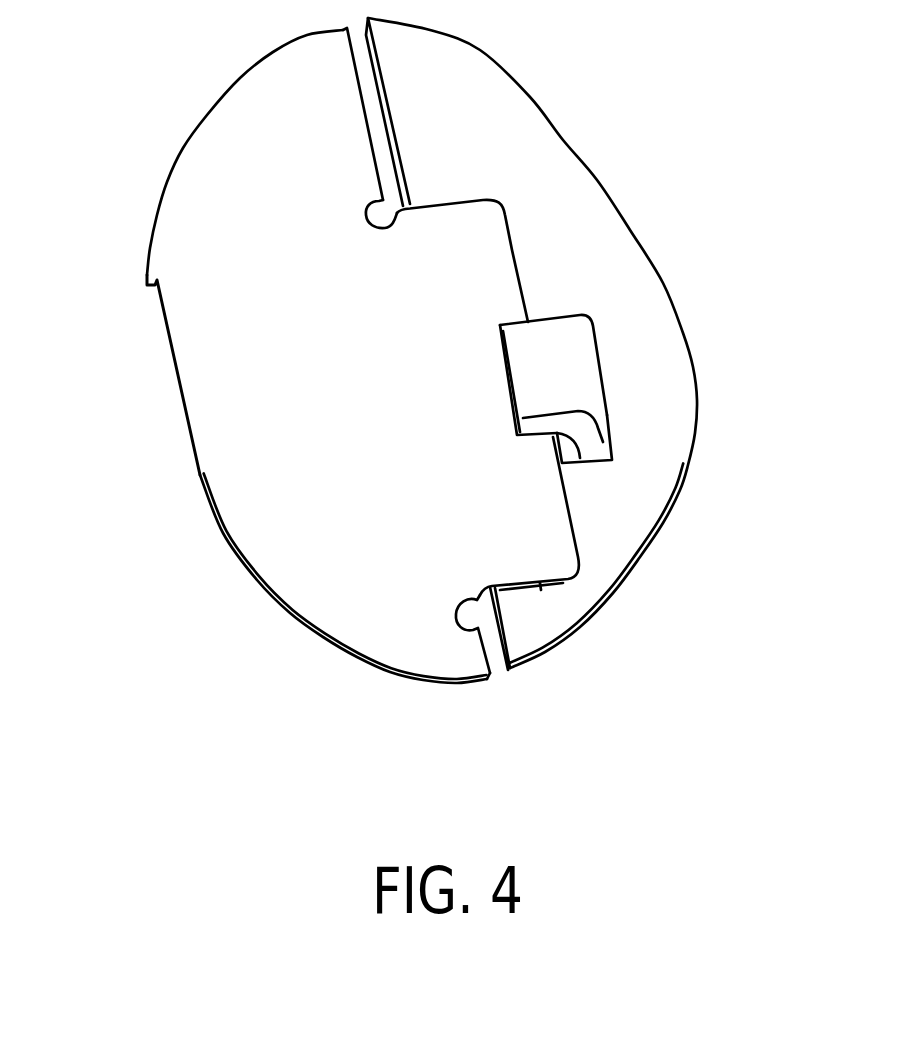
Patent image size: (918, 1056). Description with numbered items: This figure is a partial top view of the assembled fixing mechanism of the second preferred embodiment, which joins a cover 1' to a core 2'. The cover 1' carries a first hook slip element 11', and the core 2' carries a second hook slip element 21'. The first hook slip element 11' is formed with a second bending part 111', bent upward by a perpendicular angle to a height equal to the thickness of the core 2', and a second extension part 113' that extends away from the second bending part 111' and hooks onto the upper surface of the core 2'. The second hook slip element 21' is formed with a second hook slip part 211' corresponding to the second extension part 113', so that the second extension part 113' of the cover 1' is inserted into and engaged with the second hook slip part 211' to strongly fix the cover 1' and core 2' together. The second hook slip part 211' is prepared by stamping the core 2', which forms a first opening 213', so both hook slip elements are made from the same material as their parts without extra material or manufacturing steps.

The cover 1' is at (332, 432).
The first hook slip element 11' is at (510, 636).
The second bending part 111' is at (450, 683).
The second extension part 113' is at (579, 672).
The core 2' is at (609, 343).
The second hook slip element 21' is at (671, 317).
The second hook slip part 211' is at (623, 326).
The first opening 213' is at (682, 371).